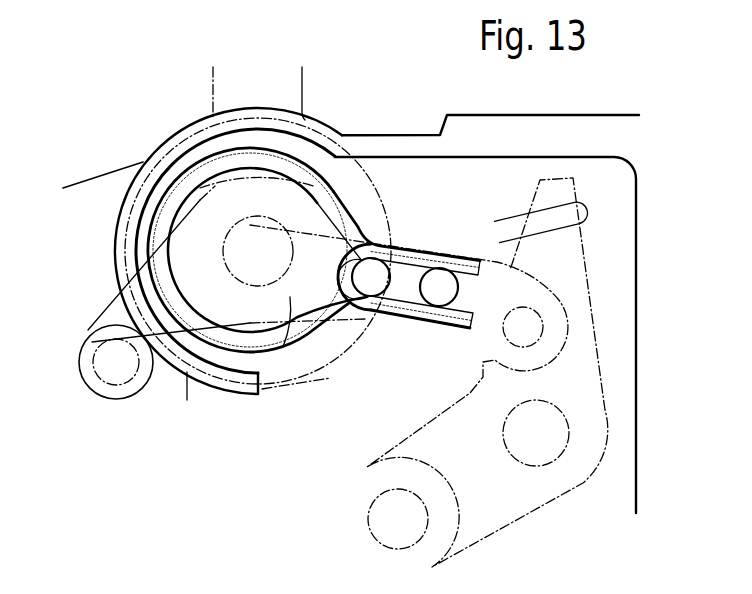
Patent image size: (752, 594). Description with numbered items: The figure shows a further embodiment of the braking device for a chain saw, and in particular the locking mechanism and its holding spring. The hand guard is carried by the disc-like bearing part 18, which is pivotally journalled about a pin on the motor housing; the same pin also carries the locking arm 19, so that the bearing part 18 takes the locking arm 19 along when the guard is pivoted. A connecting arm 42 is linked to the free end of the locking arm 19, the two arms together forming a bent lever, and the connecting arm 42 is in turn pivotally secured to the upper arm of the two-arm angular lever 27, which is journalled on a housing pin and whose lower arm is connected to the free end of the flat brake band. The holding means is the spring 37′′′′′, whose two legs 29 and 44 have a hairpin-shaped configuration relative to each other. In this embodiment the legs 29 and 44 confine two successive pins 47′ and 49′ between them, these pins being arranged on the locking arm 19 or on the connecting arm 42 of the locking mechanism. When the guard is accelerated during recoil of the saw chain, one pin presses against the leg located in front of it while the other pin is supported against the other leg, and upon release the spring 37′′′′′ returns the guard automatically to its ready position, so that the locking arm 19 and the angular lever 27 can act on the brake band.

The spring 37′′′′′ is at (313, 172).
The bearing part 18 is at (289, 300).
The locking arm 19 is at (412, 243).
The leg 44 is at (450, 315).
The pin 49′ is at (373, 270).
The leg 29 is at (437, 266).
The pin 47′ is at (460, 286).
The angular lever 27 is at (563, 380).
The connecting arm 42 is at (548, 307).